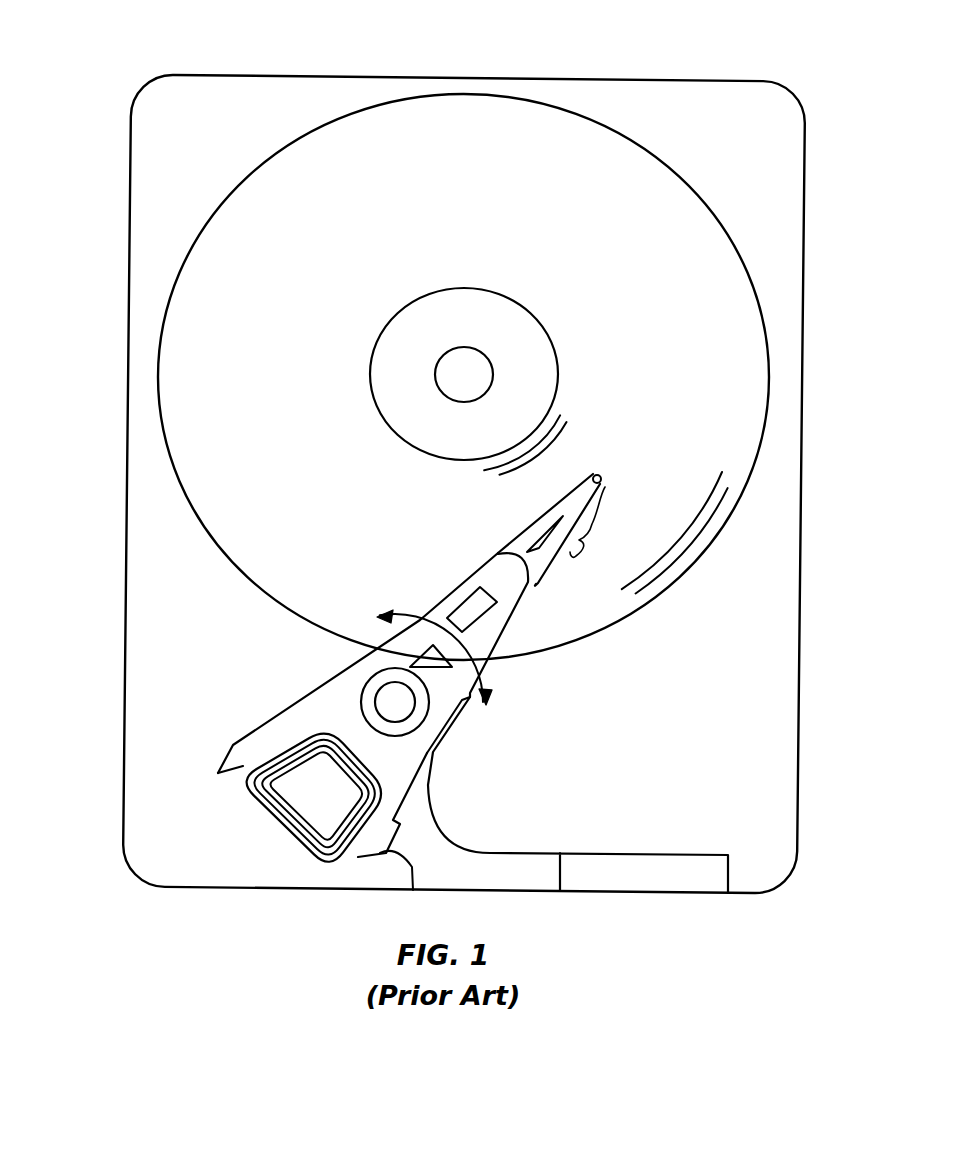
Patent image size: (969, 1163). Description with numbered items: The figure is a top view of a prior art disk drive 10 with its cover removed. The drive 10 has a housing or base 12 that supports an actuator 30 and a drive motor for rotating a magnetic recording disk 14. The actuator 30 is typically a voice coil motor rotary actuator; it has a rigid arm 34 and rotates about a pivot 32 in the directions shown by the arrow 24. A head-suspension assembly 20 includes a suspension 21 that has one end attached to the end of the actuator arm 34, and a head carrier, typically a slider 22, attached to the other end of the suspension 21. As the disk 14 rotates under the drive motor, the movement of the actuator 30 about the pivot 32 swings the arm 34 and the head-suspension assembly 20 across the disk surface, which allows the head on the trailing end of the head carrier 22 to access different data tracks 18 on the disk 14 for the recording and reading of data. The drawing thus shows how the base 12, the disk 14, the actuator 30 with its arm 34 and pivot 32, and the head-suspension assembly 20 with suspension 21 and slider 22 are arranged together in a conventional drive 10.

The disk drive 10 is at (145, 42).
The housing or base 12 is at (805, 178).
The magnetic recording disk 14 is at (245, 200).
The data tracks 18 is at (568, 427).
The head-suspension assembly 20 is at (595, 525).
The suspension 21 is at (517, 546).
The slider 22 is at (606, 471).
The arrow 24 is at (482, 682).
The actuator 30 is at (222, 760).
The pivot 32 is at (391, 700).
The rigid arm 34 is at (458, 597).